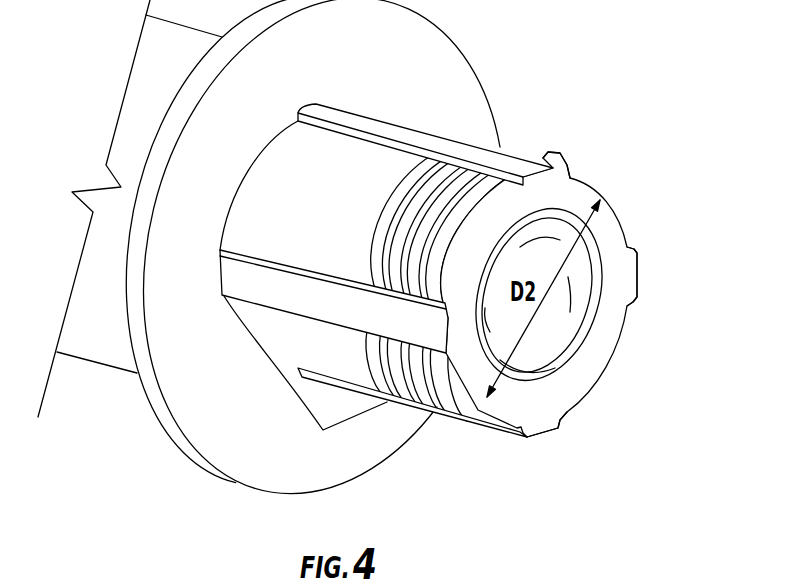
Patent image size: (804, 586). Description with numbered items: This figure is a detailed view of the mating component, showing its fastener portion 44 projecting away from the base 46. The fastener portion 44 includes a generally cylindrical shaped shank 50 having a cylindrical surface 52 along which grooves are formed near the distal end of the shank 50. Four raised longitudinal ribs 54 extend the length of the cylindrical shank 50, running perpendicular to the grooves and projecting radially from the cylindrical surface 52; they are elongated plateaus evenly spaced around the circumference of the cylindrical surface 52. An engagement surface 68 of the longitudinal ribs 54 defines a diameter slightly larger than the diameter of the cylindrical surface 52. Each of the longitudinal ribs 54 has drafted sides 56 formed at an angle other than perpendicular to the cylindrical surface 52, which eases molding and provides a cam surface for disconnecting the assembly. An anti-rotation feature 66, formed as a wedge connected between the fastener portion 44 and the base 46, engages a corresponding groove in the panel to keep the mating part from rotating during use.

The fastener portion 44 is at (474, 60).
The base 46 is at (165, 342).
The cylindrical shank 50 is at (344, 143).
The cylindrical surface 52 is at (280, 170).
The longitudinal ribs 54 is at (543, 157).
The drafted sides 56 is at (397, 280).
The anti-rotation feature 66 is at (307, 392).
The engagement surface 68 is at (502, 162).